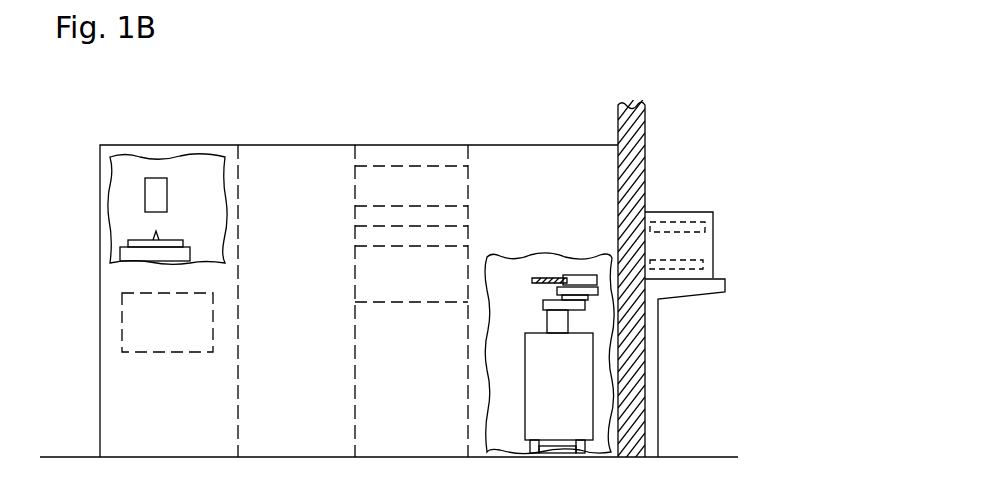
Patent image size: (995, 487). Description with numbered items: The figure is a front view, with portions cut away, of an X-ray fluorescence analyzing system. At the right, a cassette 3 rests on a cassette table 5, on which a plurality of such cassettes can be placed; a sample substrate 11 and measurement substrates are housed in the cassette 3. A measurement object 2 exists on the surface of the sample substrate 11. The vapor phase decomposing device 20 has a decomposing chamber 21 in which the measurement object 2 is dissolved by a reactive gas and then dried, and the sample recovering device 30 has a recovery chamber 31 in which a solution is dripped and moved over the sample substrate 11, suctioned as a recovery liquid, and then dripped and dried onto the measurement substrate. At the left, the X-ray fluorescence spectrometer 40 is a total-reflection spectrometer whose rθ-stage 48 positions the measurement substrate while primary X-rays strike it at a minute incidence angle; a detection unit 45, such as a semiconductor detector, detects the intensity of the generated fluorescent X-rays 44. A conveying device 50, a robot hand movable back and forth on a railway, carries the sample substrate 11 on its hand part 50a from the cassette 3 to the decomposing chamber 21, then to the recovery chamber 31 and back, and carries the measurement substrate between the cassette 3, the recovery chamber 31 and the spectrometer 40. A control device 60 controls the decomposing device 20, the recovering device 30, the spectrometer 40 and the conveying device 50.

The measurement object 2 is at (152, 237).
The cassette 3 is at (713, 228).
The cassette table 5 is at (725, 290).
The sample substrate 11 is at (672, 215).
The vapor phase decomposing device 20 is at (362, 282).
The decomposing chamber 21 is at (465, 240).
The sample recovering device 30 is at (355, 190).
The recovery chamber 31 is at (460, 187).
The X-ray fluorescence spectrometer 40 is at (190, 176).
The fluorescent X-rays 44 is at (150, 232).
The detection unit 45 is at (155, 178).
The substrate movement unit (rθ-stage) 48 is at (110, 258).
The conveying device 50 is at (575, 270).
The hand part 50a is at (541, 278).
The control device 60 is at (118, 322).